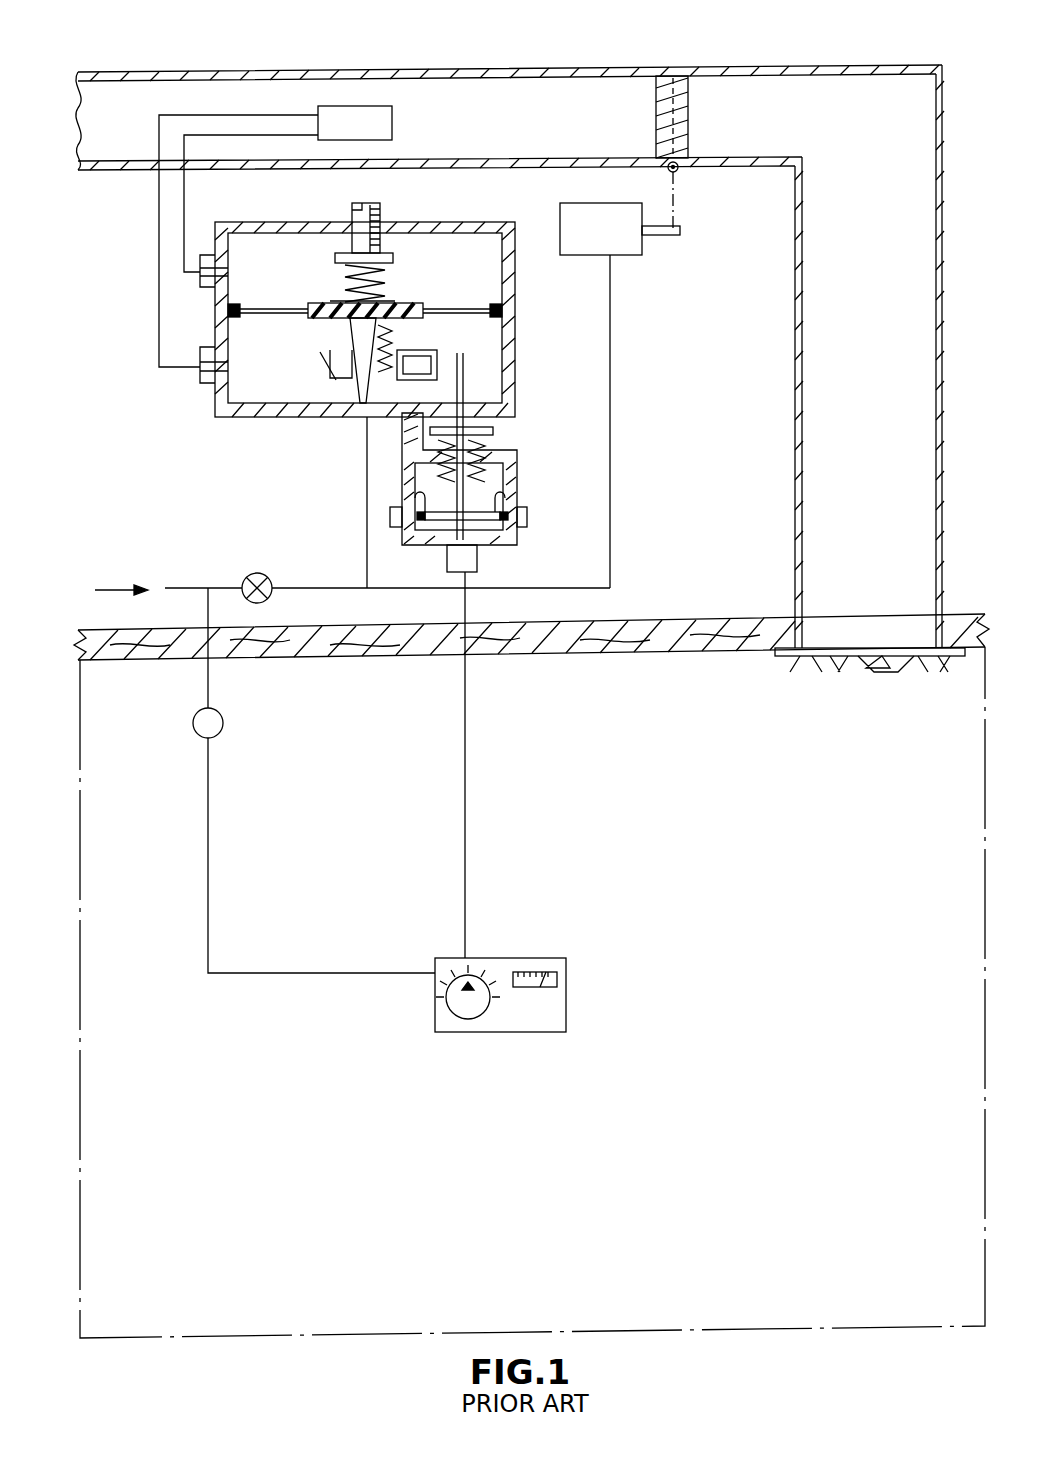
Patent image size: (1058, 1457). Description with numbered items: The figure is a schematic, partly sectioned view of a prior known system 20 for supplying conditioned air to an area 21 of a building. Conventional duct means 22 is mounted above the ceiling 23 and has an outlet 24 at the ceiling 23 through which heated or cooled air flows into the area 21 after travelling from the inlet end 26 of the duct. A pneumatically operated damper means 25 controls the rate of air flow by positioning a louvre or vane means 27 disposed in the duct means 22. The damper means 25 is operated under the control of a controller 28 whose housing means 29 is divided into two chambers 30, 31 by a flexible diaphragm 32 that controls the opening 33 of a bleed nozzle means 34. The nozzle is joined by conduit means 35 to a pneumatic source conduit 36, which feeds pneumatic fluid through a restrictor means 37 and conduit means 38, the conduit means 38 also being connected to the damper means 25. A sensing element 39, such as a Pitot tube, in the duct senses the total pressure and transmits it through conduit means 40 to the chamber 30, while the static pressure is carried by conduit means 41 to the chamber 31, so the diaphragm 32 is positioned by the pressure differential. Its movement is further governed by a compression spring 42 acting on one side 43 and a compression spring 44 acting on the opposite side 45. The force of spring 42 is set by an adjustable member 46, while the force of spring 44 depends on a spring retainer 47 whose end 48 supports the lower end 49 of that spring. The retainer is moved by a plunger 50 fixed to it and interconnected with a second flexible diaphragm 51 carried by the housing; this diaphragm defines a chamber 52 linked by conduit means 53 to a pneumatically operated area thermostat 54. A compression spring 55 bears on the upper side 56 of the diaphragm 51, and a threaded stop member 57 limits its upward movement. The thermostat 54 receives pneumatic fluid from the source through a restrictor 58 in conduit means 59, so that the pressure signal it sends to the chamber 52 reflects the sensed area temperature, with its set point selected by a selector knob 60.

The prior known system 20 is at (834, 52).
The area 21 is at (755, 850).
The duct means 22 is at (795, 440).
The ceiling 23 is at (688, 650).
The outlet 24 is at (825, 657).
The pneumatically operated damper means 25 is at (688, 210).
The inlet end 26 is at (100, 72).
The louvre or vane means 27 is at (690, 125).
The controller 28 is at (388, 355).
The housing means 29 is at (516, 279).
The chamber 30 is at (262, 248).
The chamber 31 is at (250, 392).
The flexible diaphragm 32 is at (276, 305).
The opening 33 is at (392, 310).
The bleed nozzle means 34 is at (350, 337).
The conduit means 35 is at (367, 488).
The pneumatic source conduit 36 is at (108, 588).
The restrictor means 37 is at (250, 574).
The conduit means 38 is at (610, 497).
The sensing element 39 is at (395, 122).
The conduit means 40 is at (184, 193).
The conduit means 41 is at (159, 222).
The compression spring 42 is at (390, 283).
The side 43 is at (338, 293).
The compression spring 44 is at (330, 360).
The opposite side 45 is at (396, 318).
The adjustable member 46 is at (352, 243).
The spring retainer 47 is at (449, 352).
The end 48 is at (330, 372).
The lower end 49 is at (402, 368).
The plunger 50 is at (500, 383).
The flexible diaphragm 51 is at (447, 524).
The chamber 52 is at (468, 501).
The conduit means 53 is at (465, 780).
The pneumatically operated area thermostat 54 is at (508, 999).
The compression spring 55 is at (492, 478).
The upper side 56 is at (428, 518).
The threaded stop member 57 is at (472, 455).
The restrictor 58 is at (224, 723).
The conduit means 59 is at (208, 815).
The selector knob 60 is at (455, 1003).